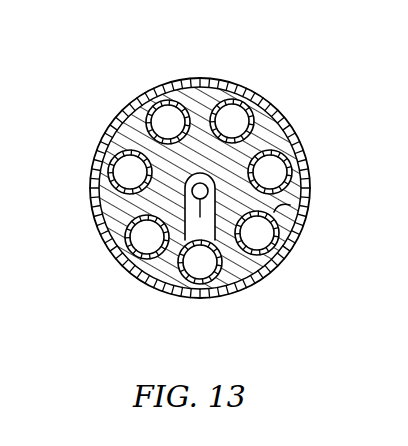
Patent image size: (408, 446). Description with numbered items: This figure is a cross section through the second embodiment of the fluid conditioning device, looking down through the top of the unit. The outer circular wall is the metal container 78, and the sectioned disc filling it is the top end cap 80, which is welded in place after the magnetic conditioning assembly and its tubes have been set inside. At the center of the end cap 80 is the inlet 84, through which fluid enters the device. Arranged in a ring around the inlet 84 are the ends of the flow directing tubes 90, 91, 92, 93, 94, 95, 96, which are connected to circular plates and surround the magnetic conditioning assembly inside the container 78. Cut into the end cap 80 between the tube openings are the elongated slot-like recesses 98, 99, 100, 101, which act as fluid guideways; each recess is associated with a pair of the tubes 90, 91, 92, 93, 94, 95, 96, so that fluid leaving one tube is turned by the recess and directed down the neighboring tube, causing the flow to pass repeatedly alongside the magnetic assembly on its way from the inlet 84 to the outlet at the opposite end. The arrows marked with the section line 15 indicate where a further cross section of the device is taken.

The section line 15- 15 is at (113, 267).
The metal container 78 is at (307, 163).
The top end cap 80 is at (281, 137).
The inlet 84 is at (206, 185).
The flow directing tube 90 is at (222, 265).
The flow directing tube 91 is at (272, 248).
The flow directing tube 92 is at (288, 178).
The flow directing tube 93 is at (241, 99).
The flow directing tube 94 is at (160, 102).
The flow directing tube 95 is at (147, 123).
The flow directing tube 96 is at (145, 258).
The elongated slot-like recess 98 is at (186, 222).
The elongated slot-like recess 99 is at (280, 208).
The elongated slot-like recess 100 is at (205, 100).
The elongated slot-like recess 101 is at (138, 148).